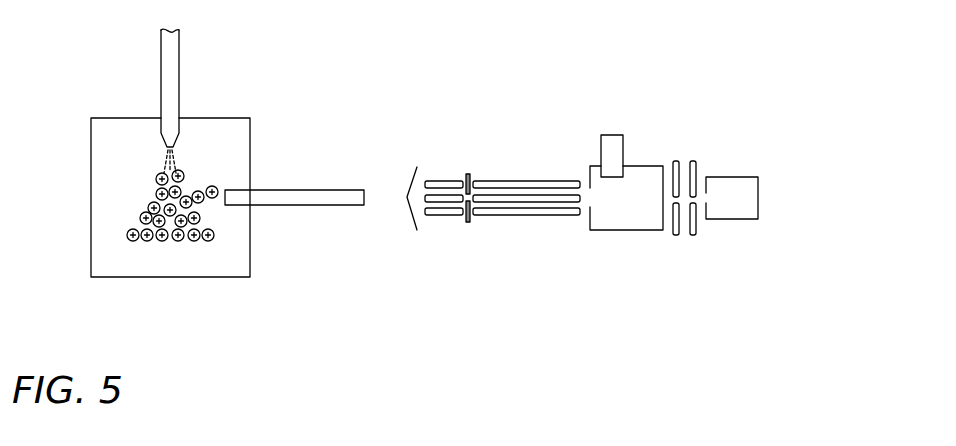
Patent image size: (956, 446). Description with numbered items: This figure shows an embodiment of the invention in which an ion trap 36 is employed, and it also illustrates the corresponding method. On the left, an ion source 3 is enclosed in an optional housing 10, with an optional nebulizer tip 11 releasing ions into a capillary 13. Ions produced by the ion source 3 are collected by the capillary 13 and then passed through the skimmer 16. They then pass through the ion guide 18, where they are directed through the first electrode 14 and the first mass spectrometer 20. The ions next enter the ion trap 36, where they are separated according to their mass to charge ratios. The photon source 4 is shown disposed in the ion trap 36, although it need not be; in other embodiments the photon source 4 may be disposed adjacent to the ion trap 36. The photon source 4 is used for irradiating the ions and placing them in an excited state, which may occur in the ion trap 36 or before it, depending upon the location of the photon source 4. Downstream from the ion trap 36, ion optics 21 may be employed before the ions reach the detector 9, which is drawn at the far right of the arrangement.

The ion source 3 is at (128, 175).
The photon source 4 is at (614, 135).
The detector 9 is at (745, 177).
The housing 10 is at (170, 278).
The nebulizer tip 11 is at (161, 53).
The capillary 13 is at (298, 190).
The first electrode 14 is at (468, 222).
The skimmer 16 is at (413, 215).
The ion guide 18 is at (447, 180).
The first mass spectrometer 20 is at (528, 180).
The ion optics 21 is at (687, 160).
The ion trap 36 is at (626, 230).